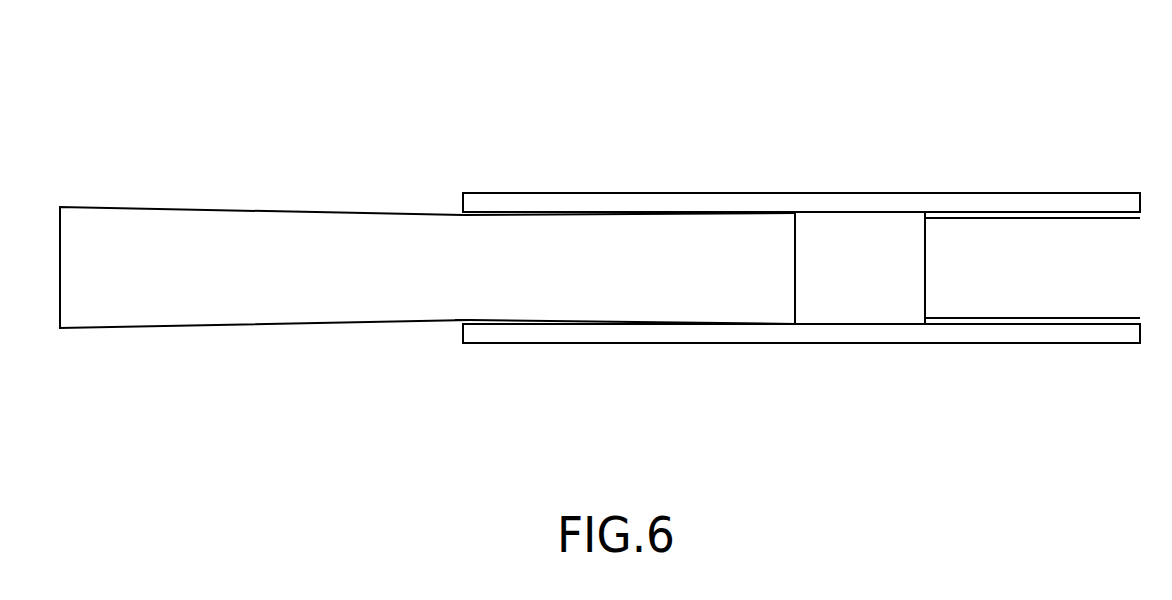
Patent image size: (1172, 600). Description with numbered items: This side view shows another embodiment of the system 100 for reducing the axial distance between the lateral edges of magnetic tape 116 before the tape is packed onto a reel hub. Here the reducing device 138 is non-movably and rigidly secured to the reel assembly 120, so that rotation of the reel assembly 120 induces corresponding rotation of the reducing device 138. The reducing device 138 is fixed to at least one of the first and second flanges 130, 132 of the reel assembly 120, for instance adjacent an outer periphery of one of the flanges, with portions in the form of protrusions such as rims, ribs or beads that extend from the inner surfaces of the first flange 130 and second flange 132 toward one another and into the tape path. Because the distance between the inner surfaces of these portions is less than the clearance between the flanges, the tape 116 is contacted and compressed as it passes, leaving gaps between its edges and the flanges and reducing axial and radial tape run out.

The system 100 is at (600, 262).
The tape 116 is at (148, 303).
The reel assembly 120 is at (946, 352).
The first flange 130 is at (602, 203).
The second flange 132 is at (598, 343).
The reducing device 138 is at (444, 323).